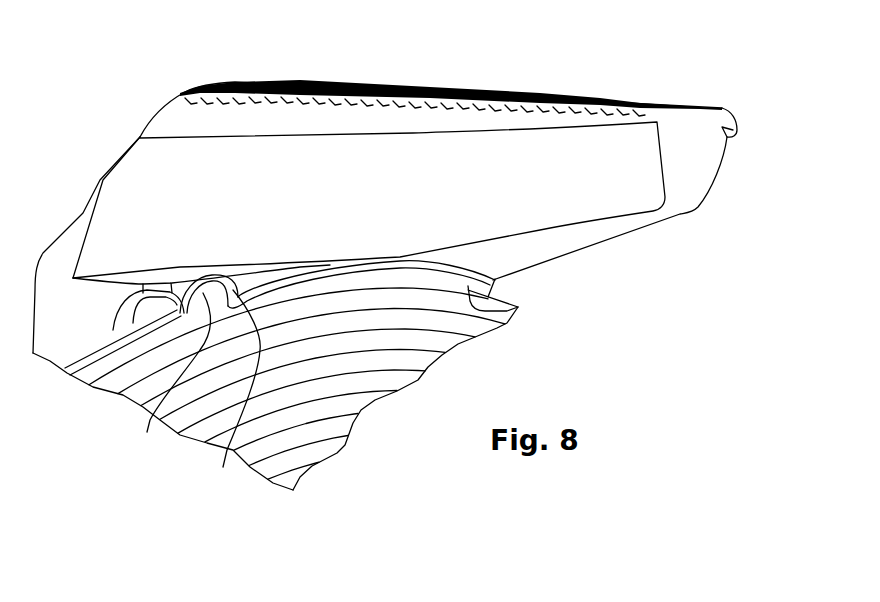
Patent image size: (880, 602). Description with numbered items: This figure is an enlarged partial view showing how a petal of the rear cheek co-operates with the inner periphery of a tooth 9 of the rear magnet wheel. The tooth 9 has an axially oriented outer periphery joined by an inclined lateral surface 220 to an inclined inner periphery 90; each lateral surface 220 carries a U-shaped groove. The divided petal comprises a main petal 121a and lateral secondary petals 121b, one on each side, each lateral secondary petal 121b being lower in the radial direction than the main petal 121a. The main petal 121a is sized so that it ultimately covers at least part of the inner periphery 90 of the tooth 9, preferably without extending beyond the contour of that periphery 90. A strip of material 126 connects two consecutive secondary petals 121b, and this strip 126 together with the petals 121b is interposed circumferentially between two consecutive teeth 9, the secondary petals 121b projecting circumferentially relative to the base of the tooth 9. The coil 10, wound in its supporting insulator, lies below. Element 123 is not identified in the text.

The tooth 9 is at (227, 89).
The lateral surface 220 is at (571, 165).
The inner periphery 90 is at (594, 237).
The main petal 121a is at (518, 307).
The lateral secondary petal 121b is at (147, 432).
The edge rib 123 is at (223, 467).
The strip of material 126 is at (90, 373).
The coil 10 is at (370, 385).